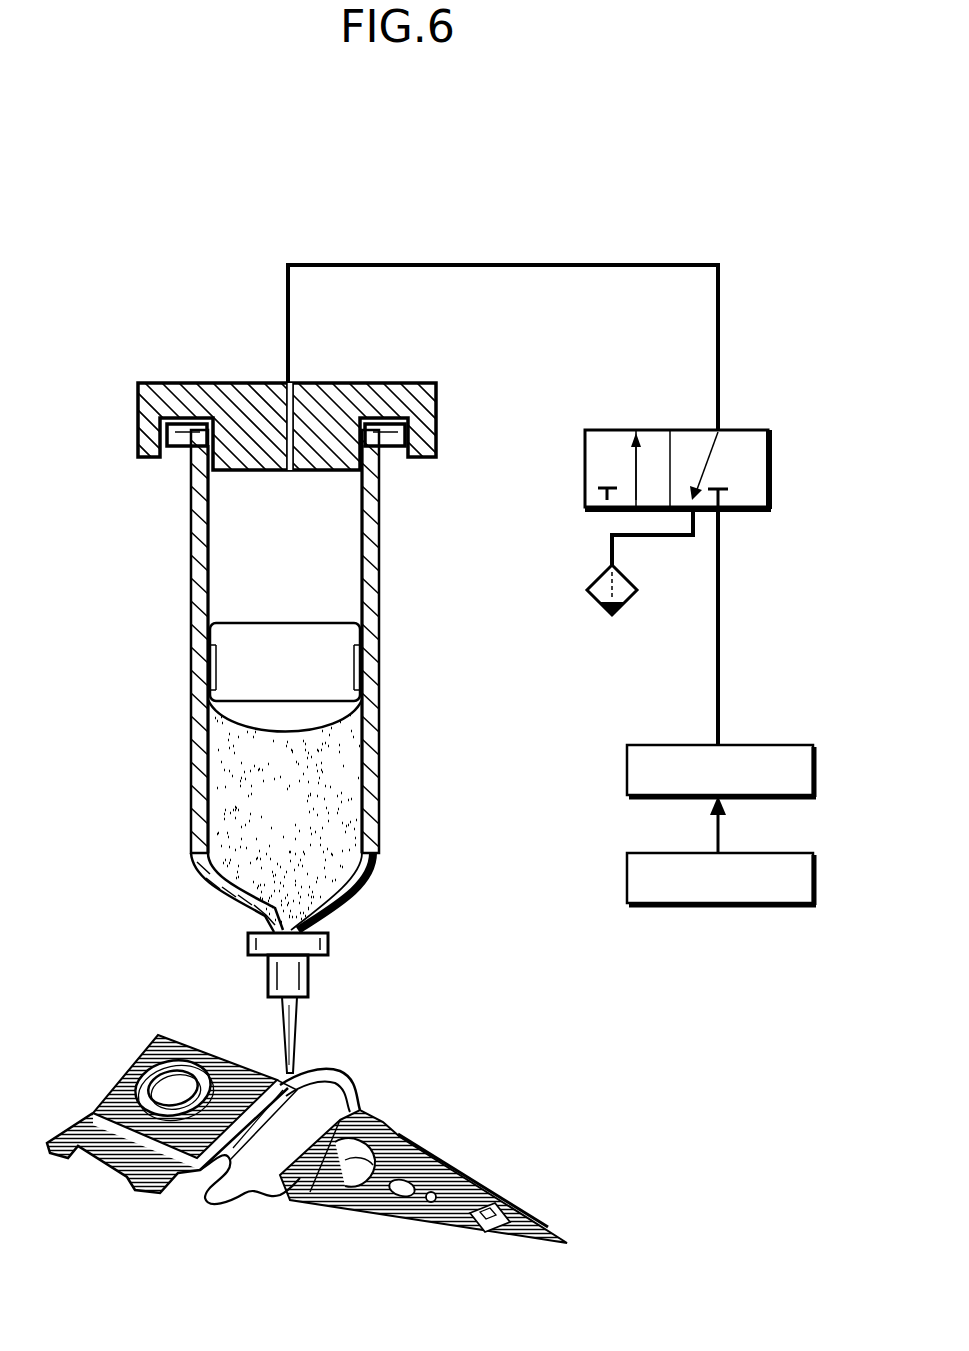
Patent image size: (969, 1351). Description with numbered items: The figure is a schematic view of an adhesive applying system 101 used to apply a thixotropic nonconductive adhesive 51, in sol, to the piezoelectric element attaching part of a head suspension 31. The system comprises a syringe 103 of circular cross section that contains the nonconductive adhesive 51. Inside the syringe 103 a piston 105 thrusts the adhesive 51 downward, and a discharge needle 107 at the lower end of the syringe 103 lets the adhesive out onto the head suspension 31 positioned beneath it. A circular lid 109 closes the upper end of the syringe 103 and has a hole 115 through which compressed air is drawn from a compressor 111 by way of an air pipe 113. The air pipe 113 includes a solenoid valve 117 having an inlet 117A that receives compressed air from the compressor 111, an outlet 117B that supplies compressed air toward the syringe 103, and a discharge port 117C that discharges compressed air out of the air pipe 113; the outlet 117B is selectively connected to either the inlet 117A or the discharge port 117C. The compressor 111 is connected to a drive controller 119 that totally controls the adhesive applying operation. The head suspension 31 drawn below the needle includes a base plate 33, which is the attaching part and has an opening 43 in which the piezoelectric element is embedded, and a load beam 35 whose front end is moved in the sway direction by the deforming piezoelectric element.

The adhesive applying system 101 is at (557, 198).
The syringe 103 is at (378, 535).
The piston 105 is at (312, 684).
The discharge needle 107 is at (292, 1040).
The circular lid 109 is at (356, 383).
The compressor 111 is at (740, 745).
The air pipe 113 is at (620, 265).
The hole 115 is at (291, 381).
The solenoid valve 117 is at (770, 420).
The inlet 117A is at (722, 509).
The outlet 117B is at (715, 430).
The discharge port 117C is at (690, 508).
The drive controller 119 is at (745, 853).
The nonconductive adhesive 51 is at (300, 818).
The head suspension 31 is at (428, 1100).
The base plate 33 is at (215, 1075).
The load beam 35 is at (414, 1206).
The opening 43 is at (215, 1170).